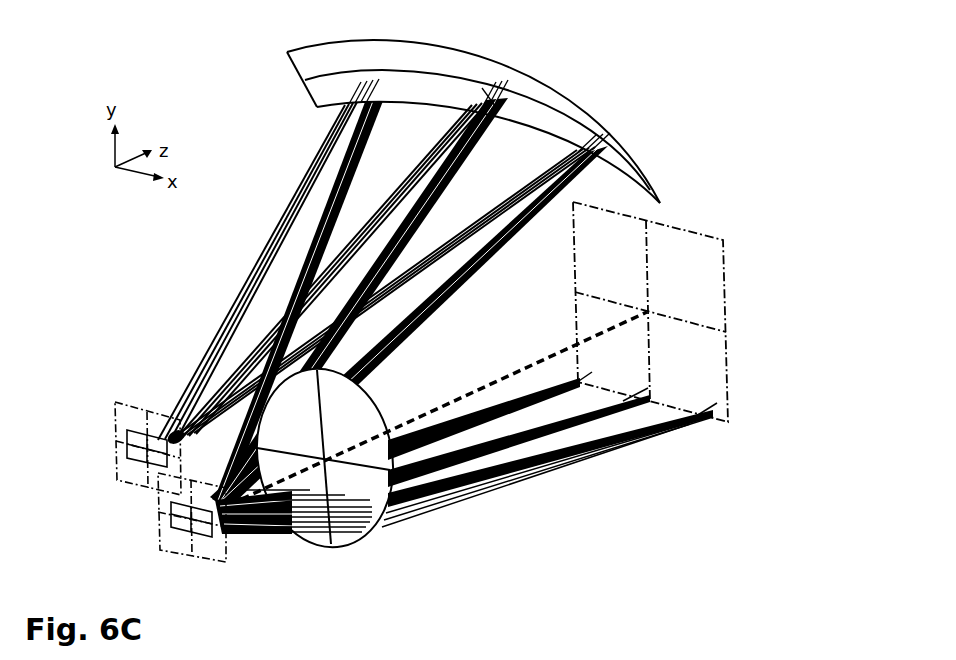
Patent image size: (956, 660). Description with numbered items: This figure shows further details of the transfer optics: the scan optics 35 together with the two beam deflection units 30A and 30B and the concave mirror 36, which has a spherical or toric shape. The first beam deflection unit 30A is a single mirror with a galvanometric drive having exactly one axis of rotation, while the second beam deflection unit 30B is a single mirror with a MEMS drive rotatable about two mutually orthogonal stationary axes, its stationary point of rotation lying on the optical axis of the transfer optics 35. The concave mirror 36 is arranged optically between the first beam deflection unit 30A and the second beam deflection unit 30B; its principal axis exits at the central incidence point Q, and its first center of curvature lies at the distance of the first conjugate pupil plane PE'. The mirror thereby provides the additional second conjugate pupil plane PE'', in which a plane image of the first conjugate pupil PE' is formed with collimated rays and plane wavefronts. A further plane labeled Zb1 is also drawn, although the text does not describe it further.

The curved mirror 36 is at (547, 82).
The reflection point on mirror Q is at (490, 86).
The image zone Zb1 is at (690, 232).
The pupil plane PE'' is at (119, 448).
The light source segment 30A is at (137, 465).
The pupil plane PE' is at (173, 535).
The light source segment 30B is at (170, 522).
The lens 35 is at (317, 543).